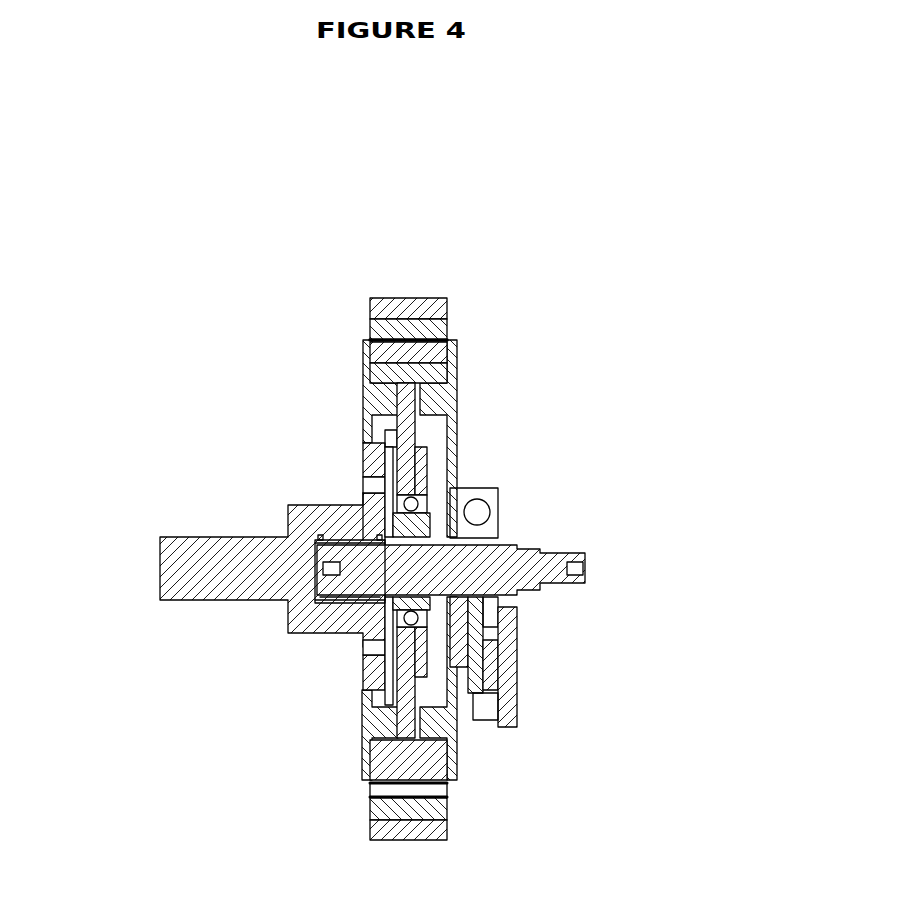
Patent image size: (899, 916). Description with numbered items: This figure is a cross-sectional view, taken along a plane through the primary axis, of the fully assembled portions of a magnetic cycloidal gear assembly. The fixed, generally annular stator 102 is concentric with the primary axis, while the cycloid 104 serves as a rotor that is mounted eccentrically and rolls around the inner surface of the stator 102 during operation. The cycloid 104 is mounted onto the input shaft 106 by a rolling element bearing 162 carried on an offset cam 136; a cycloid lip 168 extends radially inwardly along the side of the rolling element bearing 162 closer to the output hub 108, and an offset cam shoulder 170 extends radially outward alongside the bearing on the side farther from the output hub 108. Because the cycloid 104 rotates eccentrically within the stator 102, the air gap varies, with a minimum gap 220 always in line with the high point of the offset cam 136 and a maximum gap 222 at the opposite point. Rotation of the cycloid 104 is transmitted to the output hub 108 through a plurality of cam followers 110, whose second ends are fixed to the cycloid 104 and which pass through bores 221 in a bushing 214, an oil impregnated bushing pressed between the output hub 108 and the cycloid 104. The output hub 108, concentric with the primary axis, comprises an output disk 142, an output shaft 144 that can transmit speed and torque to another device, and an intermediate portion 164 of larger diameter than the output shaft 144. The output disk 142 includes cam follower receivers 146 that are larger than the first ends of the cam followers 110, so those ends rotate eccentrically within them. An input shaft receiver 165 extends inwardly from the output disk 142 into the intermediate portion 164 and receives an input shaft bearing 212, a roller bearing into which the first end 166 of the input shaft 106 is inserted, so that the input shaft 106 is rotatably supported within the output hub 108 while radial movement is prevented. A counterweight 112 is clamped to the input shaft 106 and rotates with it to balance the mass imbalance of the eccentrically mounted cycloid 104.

The stator 102 is at (447, 300).
The cycloid 104 is at (425, 435).
The input shaft 106 is at (533, 557).
The output hub 108 is at (159, 544).
The cam followers 110 is at (360, 455).
The counterweight 112 is at (510, 678).
The offset cam 136 is at (428, 525).
The output disk 142 is at (362, 440).
The output shaft 144 is at (330, 580).
The cam follower receivers 146 is at (352, 489).
The rolling element bearing 162 is at (427, 500).
The intermediate portion 164 is at (340, 497).
The input shaft receiver 165 is at (306, 550).
The first end of the input shaft 166 is at (363, 598).
The cycloid lip 168 is at (400, 495).
The offset cam shoulder 170 is at (430, 608).
The input shaft bearing 212 is at (362, 642).
The bushing 214 is at (362, 420).
The minimum gap 220 is at (466, 340).
The bores 221 is at (363, 648).
The maximum gap 222 is at (466, 790).